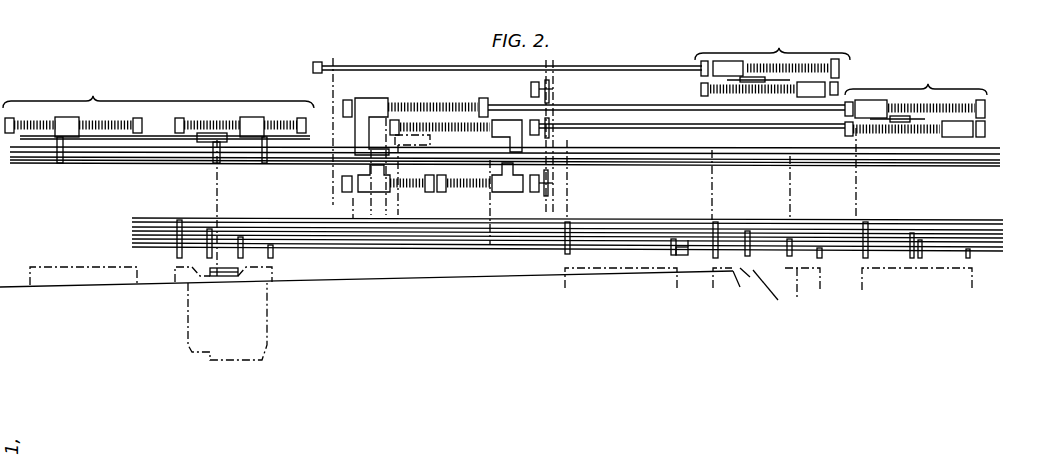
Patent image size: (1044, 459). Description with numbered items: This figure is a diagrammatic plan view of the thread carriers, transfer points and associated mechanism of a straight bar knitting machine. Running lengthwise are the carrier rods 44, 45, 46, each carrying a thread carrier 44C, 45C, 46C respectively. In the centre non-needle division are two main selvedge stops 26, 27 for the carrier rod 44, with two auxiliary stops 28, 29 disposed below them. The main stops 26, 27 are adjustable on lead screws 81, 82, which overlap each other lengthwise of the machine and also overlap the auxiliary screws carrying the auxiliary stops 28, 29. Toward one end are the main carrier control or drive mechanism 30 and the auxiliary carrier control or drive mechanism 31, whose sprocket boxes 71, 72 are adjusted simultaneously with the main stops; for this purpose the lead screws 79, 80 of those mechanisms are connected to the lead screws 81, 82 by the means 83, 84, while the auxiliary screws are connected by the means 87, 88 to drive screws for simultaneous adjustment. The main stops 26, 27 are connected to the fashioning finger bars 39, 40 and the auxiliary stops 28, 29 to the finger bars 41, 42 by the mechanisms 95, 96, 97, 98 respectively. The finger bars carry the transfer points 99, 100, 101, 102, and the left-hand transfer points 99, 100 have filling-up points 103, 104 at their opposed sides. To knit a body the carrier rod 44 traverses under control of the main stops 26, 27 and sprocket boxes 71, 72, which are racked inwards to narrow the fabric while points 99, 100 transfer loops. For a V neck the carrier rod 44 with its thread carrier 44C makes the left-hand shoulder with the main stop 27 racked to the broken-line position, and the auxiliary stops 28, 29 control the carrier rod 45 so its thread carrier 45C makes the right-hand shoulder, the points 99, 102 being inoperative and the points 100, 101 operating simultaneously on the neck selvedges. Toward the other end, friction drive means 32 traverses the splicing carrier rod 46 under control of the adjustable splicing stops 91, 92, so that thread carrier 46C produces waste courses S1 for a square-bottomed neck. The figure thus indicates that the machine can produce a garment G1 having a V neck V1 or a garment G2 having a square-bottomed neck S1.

The main selvedge stop 26 is at (377, 106).
The main selvedge stop 27 is at (508, 120).
The auxiliary stop 28 is at (341, 178).
The auxiliary stop 29 is at (508, 192).
The main carrier control or drive mechanism 30 is at (927, 86).
The auxiliary carrier control or drive mechanism 31 is at (772, 59).
The friction drive means 32 is at (158, 121).
The fashioning finger bar 39 is at (581, 219).
The fashioning finger bar 40 is at (612, 229).
The fashioning finger bar 41 is at (632, 237).
The fashioning finger bar 42 is at (657, 245).
The carrier rod 44 is at (663, 149).
The carrier rod 45 is at (693, 154).
The splicing carrier rod 46 is at (732, 163).
The thread carrier 44C is at (714, 196).
The thread carrier 45C is at (792, 196).
The thread carrier 46C is at (221, 193).
The sprocket box 71 is at (870, 105).
The sprocket box 72 is at (975, 128).
The lead screw 79 is at (756, 67).
The lead screw 80 is at (888, 129).
The lead screw 81 is at (413, 103).
The lead screw 82 is at (452, 121).
The connecting means 83 is at (612, 109).
The connecting means 84 is at (654, 128).
The connecting means 87 is at (336, 80).
The connecting means 88 is at (549, 88).
The splicing stop 91 is at (62, 117).
The splicing stop 92 is at (263, 120).
The connecting mechanism 95 is at (352, 202).
The connecting mechanism 96 is at (386, 194).
The connecting mechanism 97 is at (488, 210).
The connecting mechanism 98 is at (500, 210).
The transfer point 99 is at (565, 252).
The transfer point 100 is at (670, 253).
The transfer point 101 is at (679, 258).
The transfer point 102 is at (682, 254).
The filling-up point 103 is at (570, 254).
The filling-up point 104 is at (669, 258).
The square bottomed neck / waste courses S1 is at (223, 287).
The garment G1 is at (383, 285).
The garment G2 is at (267, 307).
The V neck V1 is at (776, 293).